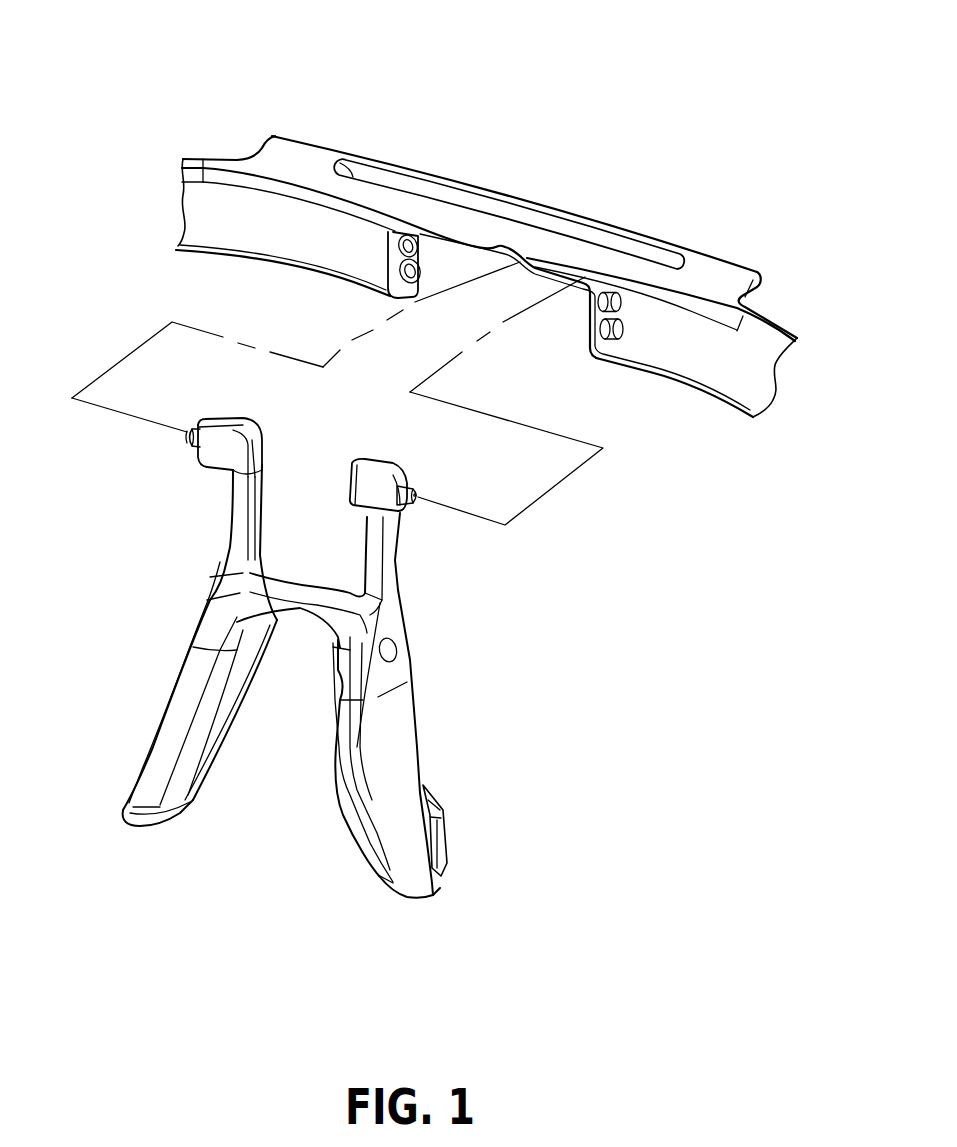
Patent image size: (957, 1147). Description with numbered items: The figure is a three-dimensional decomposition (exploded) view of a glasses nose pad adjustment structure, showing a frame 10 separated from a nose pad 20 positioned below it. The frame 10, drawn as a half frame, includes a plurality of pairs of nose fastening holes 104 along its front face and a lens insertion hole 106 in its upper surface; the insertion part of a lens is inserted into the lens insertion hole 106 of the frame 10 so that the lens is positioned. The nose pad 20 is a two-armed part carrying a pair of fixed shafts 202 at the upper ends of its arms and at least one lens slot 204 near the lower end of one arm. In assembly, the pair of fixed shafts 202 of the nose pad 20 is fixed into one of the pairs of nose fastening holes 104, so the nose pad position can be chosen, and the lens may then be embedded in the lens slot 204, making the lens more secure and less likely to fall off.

The frame 10 is at (434, 275).
The lens insertion hole 106 is at (530, 223).
The nose fastening holes 104 is at (415, 244).
The nose pad 20 is at (314, 658).
The fixed shafts 202 is at (187, 436).
The lens slot 204 is at (440, 842).